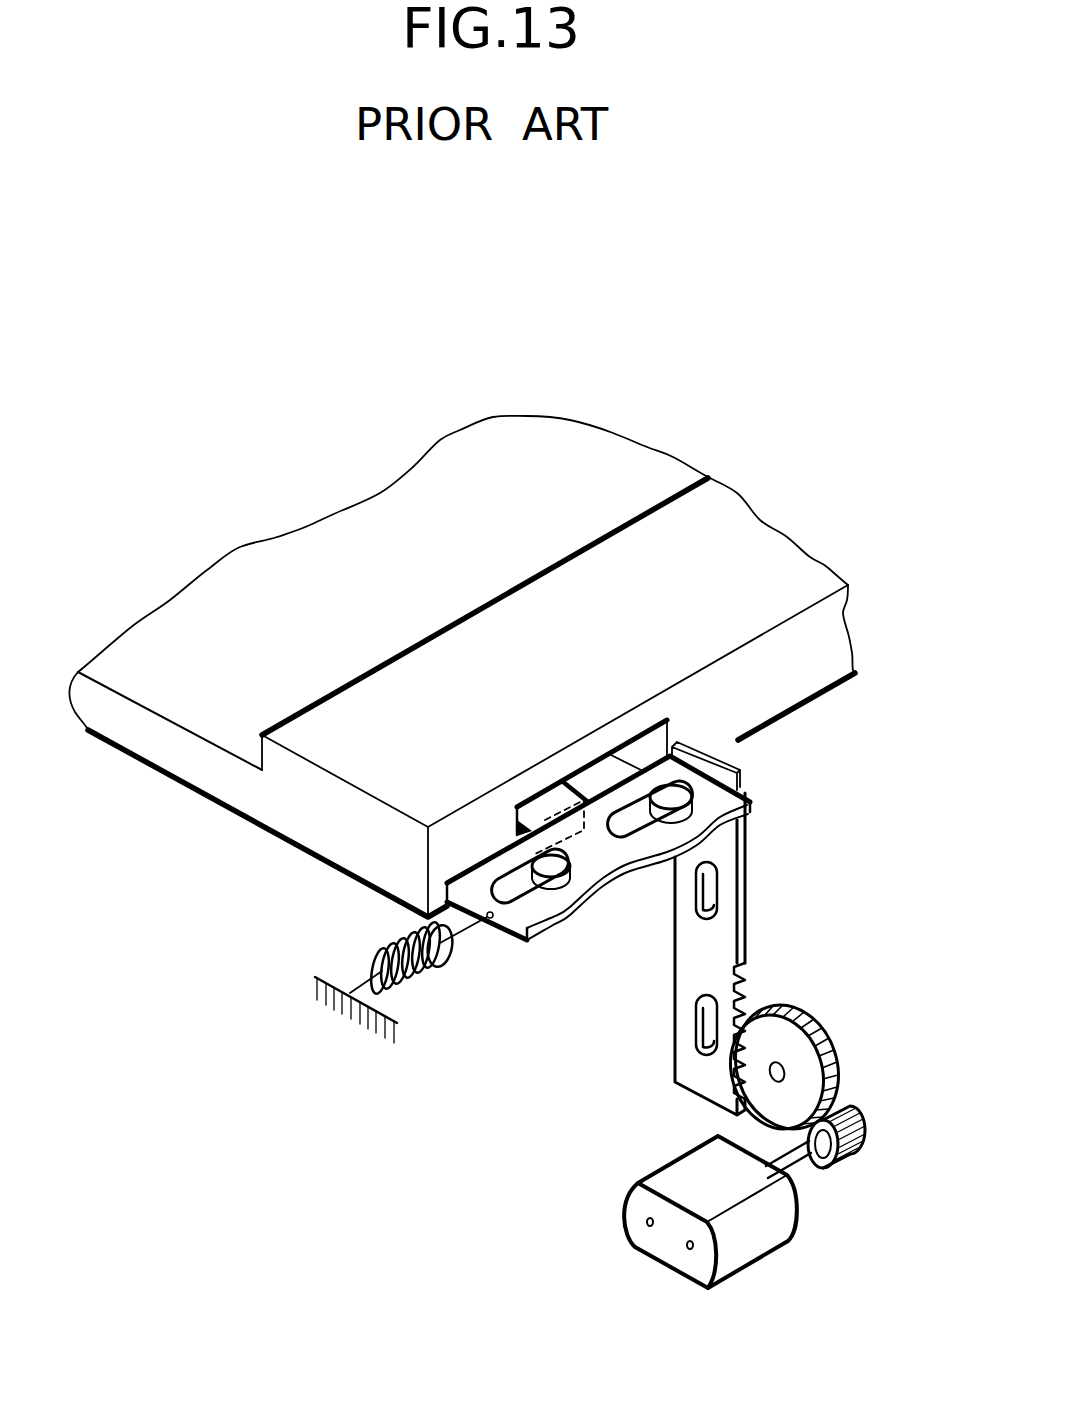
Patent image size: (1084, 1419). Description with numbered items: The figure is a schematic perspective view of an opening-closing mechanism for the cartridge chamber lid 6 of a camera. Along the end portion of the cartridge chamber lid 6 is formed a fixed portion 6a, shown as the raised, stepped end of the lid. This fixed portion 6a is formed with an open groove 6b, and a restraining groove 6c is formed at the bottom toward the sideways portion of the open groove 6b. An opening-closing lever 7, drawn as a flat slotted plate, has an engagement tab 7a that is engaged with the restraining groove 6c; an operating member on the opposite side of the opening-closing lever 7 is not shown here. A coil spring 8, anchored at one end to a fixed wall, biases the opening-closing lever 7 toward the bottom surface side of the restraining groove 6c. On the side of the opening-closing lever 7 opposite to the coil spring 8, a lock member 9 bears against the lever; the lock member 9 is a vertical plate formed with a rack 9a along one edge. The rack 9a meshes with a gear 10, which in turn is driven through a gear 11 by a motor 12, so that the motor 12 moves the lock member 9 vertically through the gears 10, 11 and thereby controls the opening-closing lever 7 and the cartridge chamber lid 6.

The cartridge chamber lid 6 is at (418, 483).
The fixed portion 6a is at (740, 547).
The open groove 6b is at (653, 742).
The restraining groove 6c is at (517, 805).
The opening-closing lever 7 is at (589, 918).
The engagement tab 7a is at (552, 795).
The coil spring 8 is at (428, 975).
The lock member 9 is at (722, 935).
The rack 9a is at (742, 982).
The gear 10 is at (817, 1035).
The gear 11 is at (855, 1118).
The motor 12 is at (748, 1242).